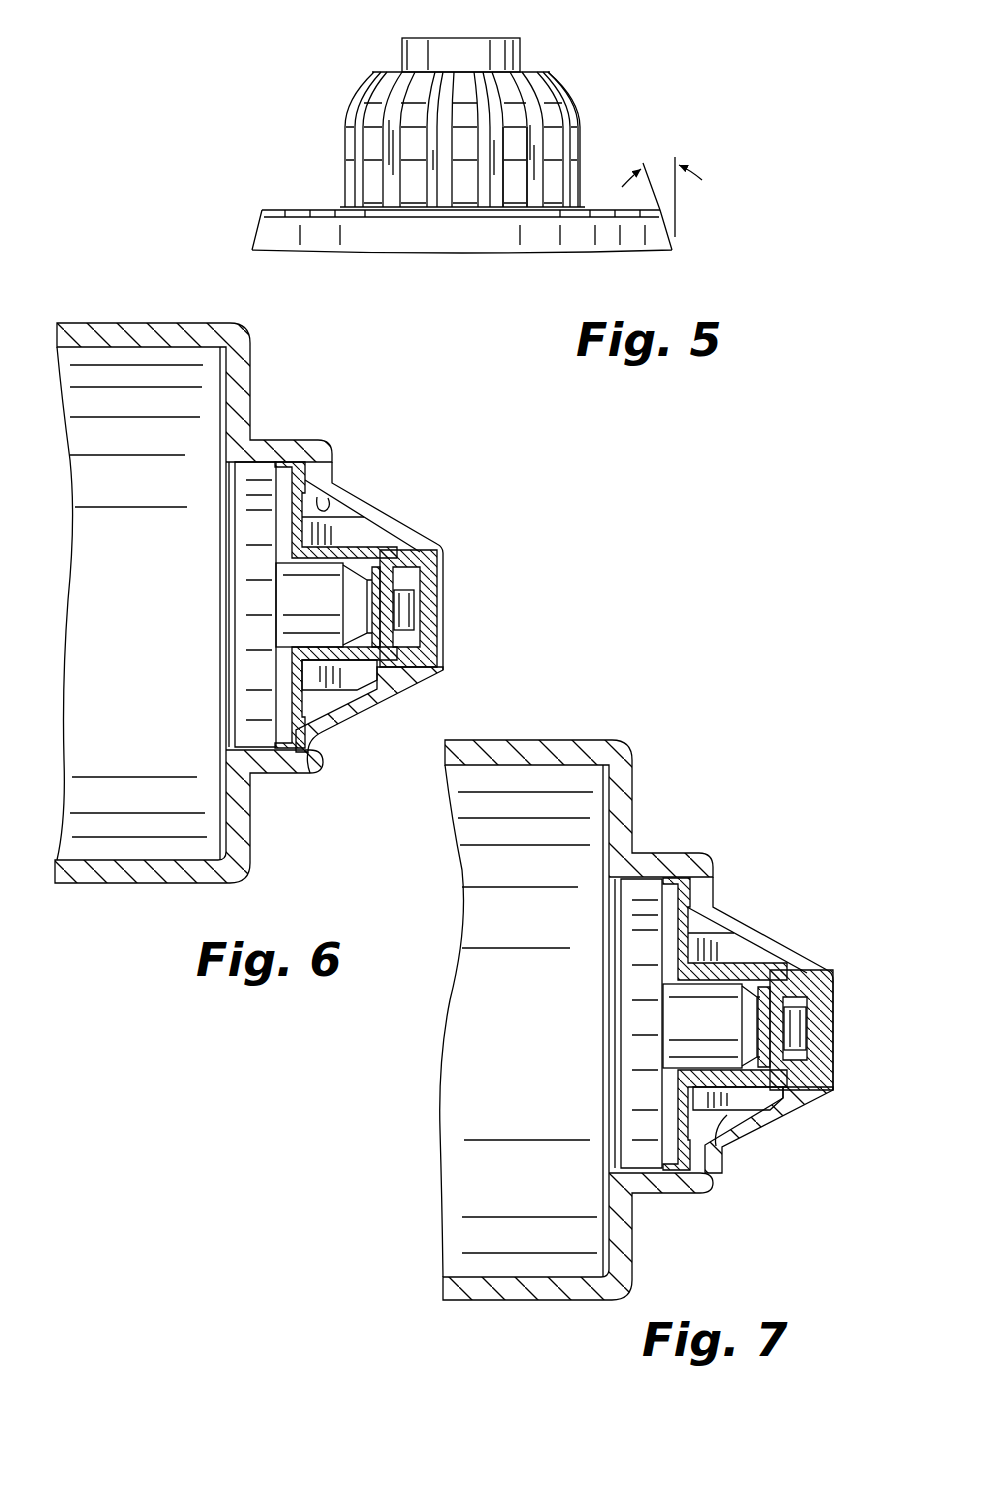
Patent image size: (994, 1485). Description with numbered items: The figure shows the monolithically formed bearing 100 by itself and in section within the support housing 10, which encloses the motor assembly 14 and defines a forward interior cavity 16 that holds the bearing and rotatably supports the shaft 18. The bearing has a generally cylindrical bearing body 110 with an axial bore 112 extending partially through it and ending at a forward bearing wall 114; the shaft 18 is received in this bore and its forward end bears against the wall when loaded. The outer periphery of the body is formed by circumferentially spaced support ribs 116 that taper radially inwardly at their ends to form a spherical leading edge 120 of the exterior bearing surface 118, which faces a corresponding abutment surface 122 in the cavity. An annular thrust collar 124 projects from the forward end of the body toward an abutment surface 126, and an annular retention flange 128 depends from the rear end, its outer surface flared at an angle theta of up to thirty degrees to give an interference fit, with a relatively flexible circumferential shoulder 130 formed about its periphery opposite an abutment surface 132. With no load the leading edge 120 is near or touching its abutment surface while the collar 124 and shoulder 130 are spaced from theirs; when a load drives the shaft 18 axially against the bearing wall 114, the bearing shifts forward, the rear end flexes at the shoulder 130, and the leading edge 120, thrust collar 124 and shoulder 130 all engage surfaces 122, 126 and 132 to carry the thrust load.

In FIG. 6, the support housing 10 is at (112, 883).
In FIG. 7, the support housing 10 is at (518, 1300).
In FIG. 6, the motor assembly 14 is at (250, 700).
In FIG. 7, the motor assembly 14 is at (647, 1147).
In FIG. 6, the forward interior cavity 16 is at (326, 503).
In FIG. 7, the forward interior cavity 16 is at (720, 1117).
In FIG. 6, the shaft 18 is at (318, 590).
In FIG. 7, the shaft 18 is at (693, 1033).
In FIG. 5, the bearing 100 is at (717, 106).
In FIG. 5, the bearing body 110 is at (600, 140).
In FIG. 6, the axial bore 112 is at (360, 585).
In FIG. 7, the axial bore 112 is at (751, 1026).
In FIG. 6, the forward bearing wall 114 is at (376, 600).
In FIG. 7, the forward bearing wall 114 is at (763, 990).
In FIG. 5, the support ribs 116 is at (513, 180).
In FIG. 5, the exterior bearing surface 118 is at (413, 148).
In FIG. 5, the spherical leading edge 120 is at (451, 111).
In FIG. 6, the spherical leading edge 120 is at (368, 700).
In FIG. 7, the spherical leading edge 120 is at (767, 1100).
In FIG. 6, the abutment surface 122 is at (360, 675).
In FIG. 7, the abutment surface 122 is at (735, 1021).
In FIG. 5, the thrust collar 124 is at (402, 50).
In FIG. 6, the thrust collar 124 is at (428, 580).
In FIG. 7, the thrust collar 124 is at (793, 997).
In FIG. 6, the abutment surface 126 is at (415, 616).
In FIG. 7, the abutment surface 126 is at (795, 1028).
In FIG. 6, the retention flange 128 is at (293, 462).
In FIG. 7, the retention flange 128 is at (677, 878).
In FIG. 5, the circumferential shoulder 130 is at (270, 210).
In FIG. 6, the circumferential shoulder 130 is at (297, 740).
In FIG. 7, the circumferential shoulder 130 is at (693, 897).
In FIG. 6, the abutment surface 132 is at (322, 757).